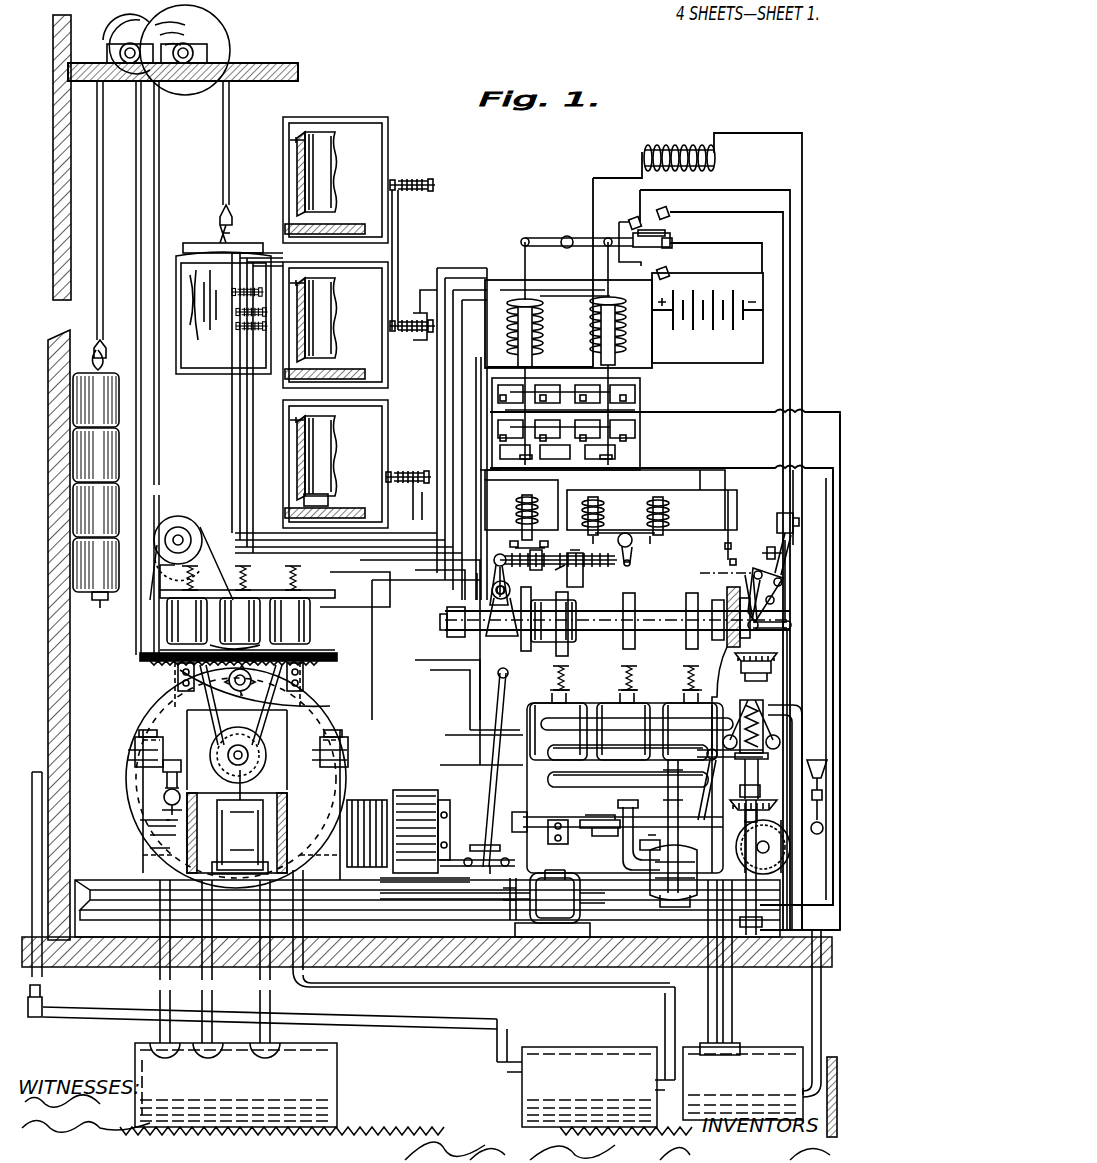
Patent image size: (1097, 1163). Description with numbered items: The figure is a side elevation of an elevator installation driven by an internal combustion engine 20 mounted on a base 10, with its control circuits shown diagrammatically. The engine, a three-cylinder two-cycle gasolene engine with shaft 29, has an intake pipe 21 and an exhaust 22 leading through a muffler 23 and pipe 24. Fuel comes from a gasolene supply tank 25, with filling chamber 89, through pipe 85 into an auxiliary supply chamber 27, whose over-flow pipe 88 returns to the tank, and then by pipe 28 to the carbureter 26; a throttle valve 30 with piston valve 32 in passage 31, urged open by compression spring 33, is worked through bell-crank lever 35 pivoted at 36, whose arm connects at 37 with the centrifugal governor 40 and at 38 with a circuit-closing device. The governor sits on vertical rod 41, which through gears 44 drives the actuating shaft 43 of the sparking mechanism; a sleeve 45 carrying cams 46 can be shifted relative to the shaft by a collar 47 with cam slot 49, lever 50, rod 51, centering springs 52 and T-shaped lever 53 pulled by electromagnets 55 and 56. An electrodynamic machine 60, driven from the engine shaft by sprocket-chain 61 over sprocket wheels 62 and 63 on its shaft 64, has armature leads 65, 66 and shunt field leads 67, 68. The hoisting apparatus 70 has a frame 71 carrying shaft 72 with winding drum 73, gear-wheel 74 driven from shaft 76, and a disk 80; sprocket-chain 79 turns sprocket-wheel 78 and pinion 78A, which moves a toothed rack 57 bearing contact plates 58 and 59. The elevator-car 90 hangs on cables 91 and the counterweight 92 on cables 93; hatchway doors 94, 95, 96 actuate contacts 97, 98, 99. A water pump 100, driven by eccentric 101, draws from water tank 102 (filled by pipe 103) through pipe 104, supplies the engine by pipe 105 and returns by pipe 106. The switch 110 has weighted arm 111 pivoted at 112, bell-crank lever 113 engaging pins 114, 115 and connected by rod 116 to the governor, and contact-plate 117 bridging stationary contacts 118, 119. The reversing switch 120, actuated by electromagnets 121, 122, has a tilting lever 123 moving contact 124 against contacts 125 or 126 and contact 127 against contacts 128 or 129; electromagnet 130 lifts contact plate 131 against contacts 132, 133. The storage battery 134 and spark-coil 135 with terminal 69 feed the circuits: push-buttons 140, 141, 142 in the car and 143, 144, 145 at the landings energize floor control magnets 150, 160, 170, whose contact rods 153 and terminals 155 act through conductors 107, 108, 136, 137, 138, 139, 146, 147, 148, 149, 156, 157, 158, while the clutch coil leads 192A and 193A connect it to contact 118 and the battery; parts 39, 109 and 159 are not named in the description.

The base 10 is at (102, 890).
The internal combustion engine 20 is at (540, 705).
The intake or supply pipe 21 is at (560, 770).
The outlet or exhaust 22 is at (575, 740).
The muffler 23 is at (600, 1054).
The pipe 24 is at (118, 1010).
The gasolene supply tank 25 is at (340, 1096).
The carbureter 26 is at (698, 878).
The auxiliary supply chamber 27 is at (272, 812).
The pipe 28 is at (455, 988).
The engine shaft 29 is at (518, 800).
The throttle valve 30 is at (620, 830).
The passage 31 is at (676, 830).
The piston valve 32 is at (590, 780).
The compression spring 33 is at (583, 832).
The bell-crank lever 35 is at (680, 752).
The pivot 36 is at (711, 771).
The connection 37 is at (660, 870).
The connection 38 is at (758, 790).
The bearing 39 is at (768, 793).
The centrifugal governor 40 is at (770, 720).
The vertical rod 41 is at (795, 720).
The actuating shaft 43 is at (478, 620).
The gears 44 is at (790, 650).
The sleeve 45 is at (680, 648).
The cams 46 is at (578, 648).
The collar 47 is at (516, 640).
The cam slot 49 is at (755, 628).
The lever 50 is at (490, 596).
The rod 51 is at (507, 579).
The centering springs 52 is at (587, 572).
The T-shaped lever 53 is at (640, 548).
The electromagnet 55 is at (604, 512).
The electromagnet 56 is at (670, 515).
The slidable toothed rack 57 is at (330, 670).
The contact plate 58 is at (338, 660).
The contact plate 59 is at (178, 655).
The electrodynamic machine 60 is at (560, 888).
The sprocket-chain 61 is at (490, 870).
The sprocket wheel 62 is at (568, 817).
The sprocket-wheel 63 is at (500, 905).
The shaft 64 is at (460, 897).
The armature lead 65 is at (660, 420).
The armature lead 66 is at (750, 412).
The shunt field lead 67 is at (830, 560).
The shunt field lead 68 is at (786, 578).
The terminal 69 is at (614, 170).
The hoisting apparatus 70 is at (128, 715).
The frame 71 is at (262, 752).
The shaft 72 is at (232, 750).
The winding drum 73 is at (130, 782).
The gear-wheel 74 is at (298, 780).
The shaft 76 is at (378, 818).
The sprocket-wheel 78 is at (268, 700).
The pinion 78A is at (246, 686).
The sprocket-chain 79 is at (206, 700).
The disk 80 is at (218, 750).
The pipe 85 is at (175, 969).
The over-flow pipe 88 is at (262, 985).
The filling chamber 89 is at (178, 848).
The elevator-car 90 is at (196, 248).
The ropes or cables 91 is at (228, 180).
The counterweight 92 is at (90, 600).
The cables 93 is at (100, 250).
The hatchway door 94 is at (322, 460).
The hatchway door 95 is at (328, 338).
The hatchway door 96 is at (320, 203).
The contact 97 is at (326, 458).
The contact 98 is at (313, 320).
The contact 99 is at (326, 174).
The water pump 100 is at (755, 896).
The eccentric 101 is at (762, 866).
The water tank 102 is at (750, 1058).
The pipe 103 is at (818, 1040).
The pipe 104 is at (733, 1020).
The supply pipe 105 is at (812, 765).
The return pipe 106 is at (708, 1015).
The conductor 107 is at (412, 390).
The conductor 108 is at (372, 720).
The bracket 109 is at (555, 836).
The switch 110 is at (751, 510).
The weighted arm 111 is at (790, 525).
The pivot 112 is at (801, 614).
The bell-crank lever 113 is at (790, 628).
The pin 114 is at (725, 571).
The pin 115 is at (790, 598).
The rod 116 is at (775, 688).
The contact-plate 117 is at (784, 541).
The stationary contact 118 is at (724, 546).
The stationary contact 119 is at (730, 562).
The reversing switch 120 is at (560, 295).
The electromagnet 121 is at (540, 318).
The electromagnet 122 is at (628, 345).
The tilting lever 123 is at (580, 238).
The contact 124 is at (650, 247).
The stationary contact 125 is at (629, 375).
The stationary contact 126 is at (634, 220).
The contact 127 is at (672, 246).
The stationary contact 128 is at (670, 280).
The stationary contact 129 is at (666, 214).
The electromagnet 130 is at (527, 500).
The contact plate 131 is at (552, 552).
The stationary contact 132 is at (515, 543).
The stationary contact 133 is at (590, 535).
The storage battery 134 is at (710, 335).
The spark-coil 135 is at (679, 142).
The conductor 136 is at (509, 386).
The conductor 137 is at (516, 507).
The conductor 138 is at (473, 434).
The conductor 139 is at (646, 507).
The push-button 140 is at (246, 334).
The push-button 141 is at (240, 320).
The push-button 142 is at (244, 291).
The push-button 143 is at (404, 470).
The push-button 144 is at (412, 330).
The push-button 145 is at (415, 185).
The conductor 146 is at (716, 246).
The conductor 147 is at (740, 198).
The conductor 148 is at (770, 140).
The conductor 149 is at (742, 224).
The floor control magnet 150 is at (316, 615).
The contact rod 153 is at (330, 706).
The terminal 155 is at (312, 600).
The conductor 156 is at (316, 638).
The conductor 157 is at (492, 268).
The conductor 158 is at (316, 578).
The contact 159 is at (310, 505).
The floor control magnet 160 is at (195, 520).
The floor control magnet 170 is at (170, 612).
The lead 192A is at (730, 480).
The conductor 193A is at (470, 718).